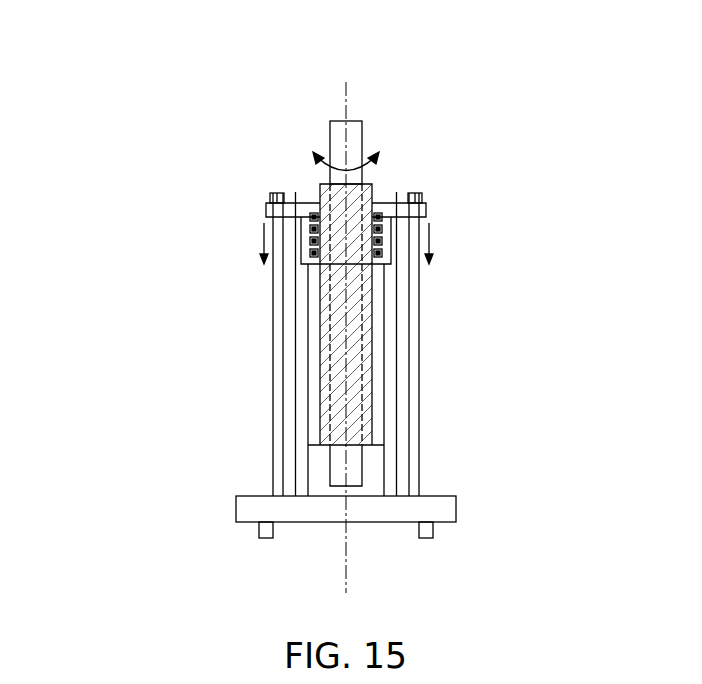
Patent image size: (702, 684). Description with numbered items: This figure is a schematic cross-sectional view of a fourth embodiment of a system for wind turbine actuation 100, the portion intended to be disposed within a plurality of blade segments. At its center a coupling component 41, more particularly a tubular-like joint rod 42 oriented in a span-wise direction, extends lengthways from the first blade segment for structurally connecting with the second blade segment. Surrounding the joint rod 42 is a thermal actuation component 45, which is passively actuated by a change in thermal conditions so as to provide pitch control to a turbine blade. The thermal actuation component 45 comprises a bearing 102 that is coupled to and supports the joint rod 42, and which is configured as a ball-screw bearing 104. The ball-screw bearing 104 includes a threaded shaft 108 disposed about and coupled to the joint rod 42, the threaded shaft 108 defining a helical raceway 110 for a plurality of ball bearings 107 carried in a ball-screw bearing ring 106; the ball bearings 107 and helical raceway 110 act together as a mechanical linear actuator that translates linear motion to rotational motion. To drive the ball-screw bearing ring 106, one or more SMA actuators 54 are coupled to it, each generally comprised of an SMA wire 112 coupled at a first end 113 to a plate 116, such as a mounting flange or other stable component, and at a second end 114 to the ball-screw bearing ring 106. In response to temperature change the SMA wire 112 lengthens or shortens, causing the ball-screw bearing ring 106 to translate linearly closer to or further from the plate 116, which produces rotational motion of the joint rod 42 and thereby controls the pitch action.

The system for wind turbine actuation 100 is at (172, 89).
The coupling component 41 is at (328, 122).
The joint rod 42 is at (363, 142).
The ball bearings 107 is at (310, 210).
The second end 114 is at (268, 196).
The ball-screw bearing ring 106 is at (383, 210).
The bearing 102 is at (292, 344).
The ball-screw bearing 104 is at (257, 280).
The SMA actuator 54 is at (273, 328).
The threaded shaft 108 is at (318, 358).
The helical raceway 110 is at (340, 407).
The SMA wire 112 is at (297, 428).
The first end 113 is at (277, 493).
The plate 116 is at (253, 513).
The thermal actuation component 45 is at (462, 182).